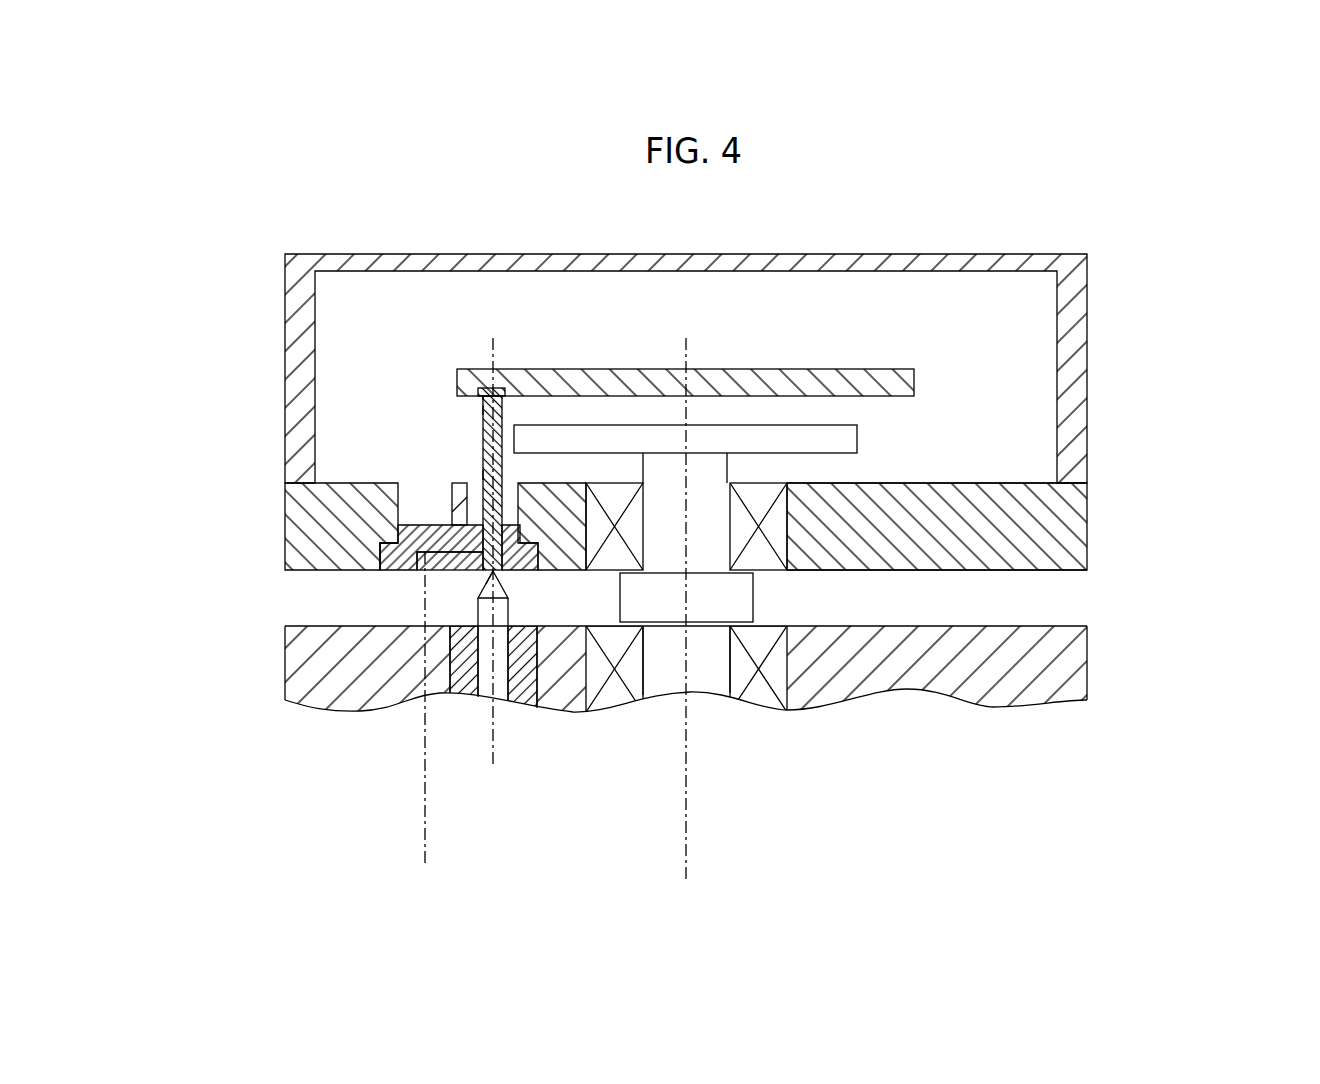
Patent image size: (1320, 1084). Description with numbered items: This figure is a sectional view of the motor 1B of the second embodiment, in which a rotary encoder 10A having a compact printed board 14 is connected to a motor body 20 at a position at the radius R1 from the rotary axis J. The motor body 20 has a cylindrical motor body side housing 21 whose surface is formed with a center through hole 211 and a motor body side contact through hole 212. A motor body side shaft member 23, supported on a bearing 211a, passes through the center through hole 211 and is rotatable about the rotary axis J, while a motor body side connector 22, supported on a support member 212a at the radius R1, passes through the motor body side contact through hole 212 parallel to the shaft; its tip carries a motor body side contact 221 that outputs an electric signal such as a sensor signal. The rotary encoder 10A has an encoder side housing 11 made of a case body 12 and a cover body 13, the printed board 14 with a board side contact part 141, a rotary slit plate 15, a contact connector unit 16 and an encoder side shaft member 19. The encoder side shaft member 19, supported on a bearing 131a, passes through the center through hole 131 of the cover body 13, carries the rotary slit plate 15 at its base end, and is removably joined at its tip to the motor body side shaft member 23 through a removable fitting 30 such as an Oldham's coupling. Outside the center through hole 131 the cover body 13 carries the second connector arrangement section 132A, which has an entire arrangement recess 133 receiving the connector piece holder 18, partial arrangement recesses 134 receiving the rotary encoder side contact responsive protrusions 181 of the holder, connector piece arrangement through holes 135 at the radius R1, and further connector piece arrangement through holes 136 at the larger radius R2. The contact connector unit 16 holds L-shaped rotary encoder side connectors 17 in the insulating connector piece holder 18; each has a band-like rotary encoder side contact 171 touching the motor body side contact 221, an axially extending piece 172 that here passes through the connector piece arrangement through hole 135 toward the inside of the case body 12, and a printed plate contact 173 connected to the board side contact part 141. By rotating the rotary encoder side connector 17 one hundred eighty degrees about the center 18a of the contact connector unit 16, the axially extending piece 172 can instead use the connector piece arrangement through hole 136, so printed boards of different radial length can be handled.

The motor 1B is at (985, 226).
The rotary encoder 10A is at (1140, 300).
The encoder side housing 11 is at (1150, 475).
The case body 12 is at (1087, 472).
The cover body 13 is at (1087, 508).
The center through hole 131 is at (787, 548).
The bearing 131a is at (770, 567).
The second connector arrangement section 132A is at (202, 472).
The entire arrangement recess 133 is at (447, 553).
The partial arrangement recess 134 is at (440, 535).
The connector piece arrangement through hole 135 is at (479, 492).
The connector piece arrangement through hole 136 is at (460, 525).
The printed board 14 is at (914, 382).
The board side contact part 141 is at (505, 398).
The rotary slit plate 15 is at (857, 442).
The contact connector unit 16 is at (378, 575).
The rotary encoder side connector 17 is at (192, 368).
The rotary encoder side contact 171 is at (482, 477).
The axially extending piece 172 is at (483, 412).
The printed plate contact 173 is at (487, 392).
The connector piece holder 18 is at (380, 556).
The rotary encoder side contact responsive protrusion 181 is at (410, 543).
The center of the contact connector unit 18a is at (462, 562).
The encoder side shaft member 19 is at (727, 470).
The motor body 20 is at (1100, 658).
The motor body side housing 21 is at (1030, 700).
The center through hole 211 is at (783, 712).
The bearing 211a is at (757, 690).
The motor body side contact through hole 212 is at (452, 678).
The support member 212a is at (468, 678).
The motor body side connector 22 is at (508, 608).
The motor body side contact 221 is at (493, 571).
The motor body side shaft member 23 is at (707, 672).
The removable fitting 30 is at (753, 593).
The rotary axis J is at (686, 825).
The radius R1 is at (686, 743).
The radius R2 is at (686, 855).